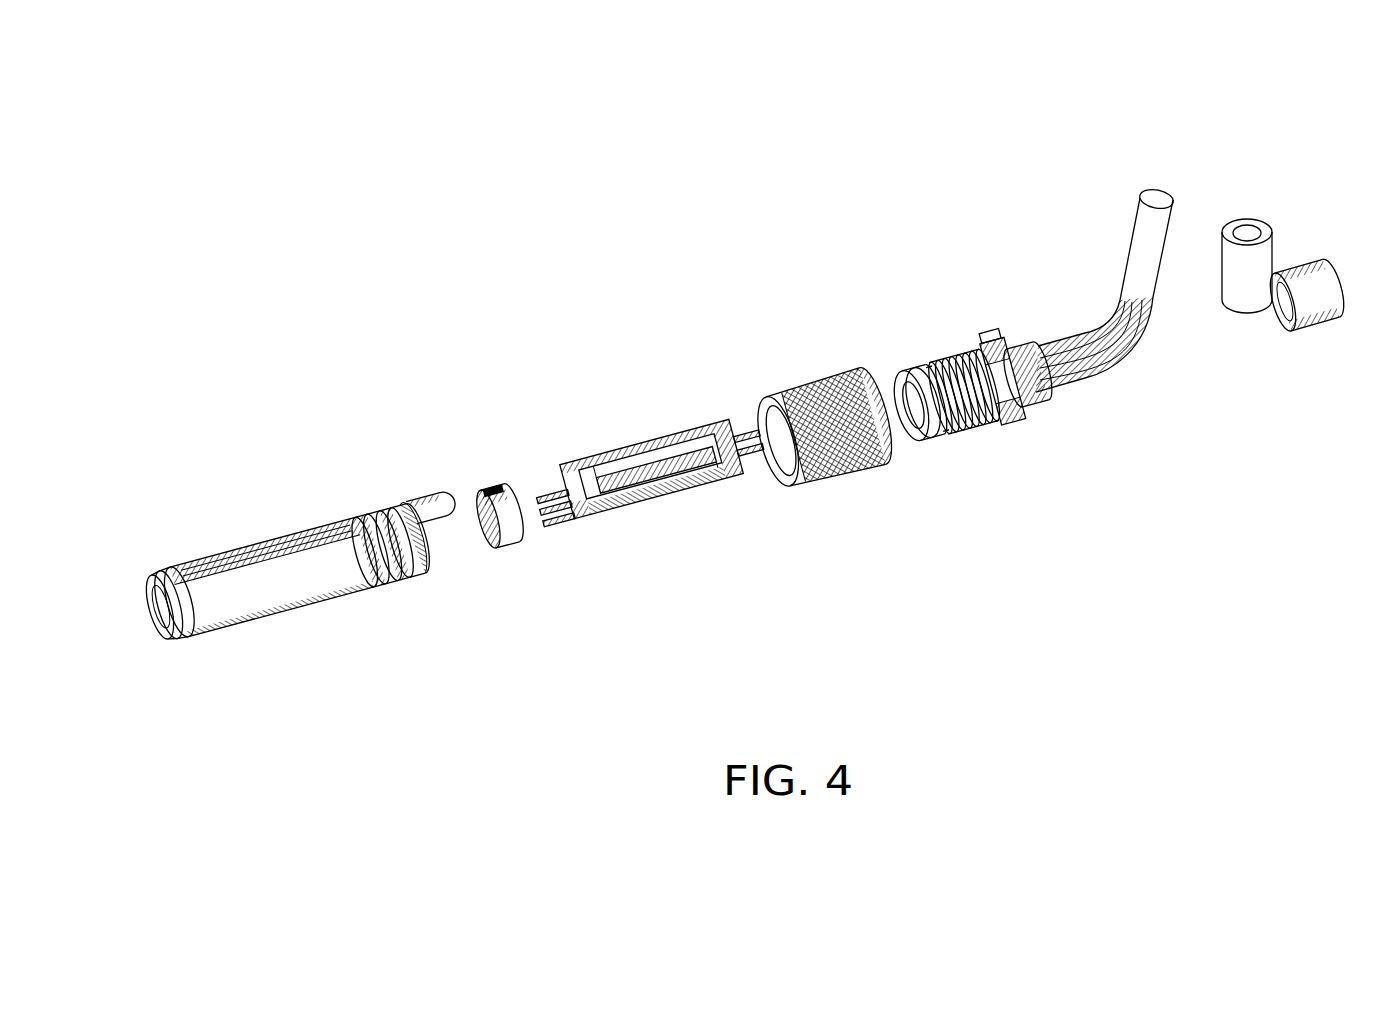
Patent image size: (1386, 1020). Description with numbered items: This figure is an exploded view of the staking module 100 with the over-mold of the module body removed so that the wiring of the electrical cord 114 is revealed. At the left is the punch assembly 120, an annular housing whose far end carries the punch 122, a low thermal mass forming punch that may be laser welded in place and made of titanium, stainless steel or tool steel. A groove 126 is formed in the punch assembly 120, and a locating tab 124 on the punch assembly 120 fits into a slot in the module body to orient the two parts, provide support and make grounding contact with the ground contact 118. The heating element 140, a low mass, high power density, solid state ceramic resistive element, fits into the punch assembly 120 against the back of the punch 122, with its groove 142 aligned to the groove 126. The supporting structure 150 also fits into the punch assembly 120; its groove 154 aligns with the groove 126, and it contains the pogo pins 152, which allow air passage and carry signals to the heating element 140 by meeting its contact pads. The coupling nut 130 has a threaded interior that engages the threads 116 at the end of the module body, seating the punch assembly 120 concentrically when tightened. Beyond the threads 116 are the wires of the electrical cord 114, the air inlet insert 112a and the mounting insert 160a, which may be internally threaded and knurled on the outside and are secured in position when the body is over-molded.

The staking module 100 is at (362, 157).
The electrical cord 114 is at (1152, 193).
The threads 116 is at (981, 409).
The ground contact 118 is at (964, 355).
The coupling nut 130 is at (828, 372).
The supporting structure 150 is at (702, 447).
The groove 154 is at (612, 458).
The pogo pins 152 is at (559, 549).
The groove 142 is at (498, 491).
The heating element 140 is at (510, 543).
The locating tab 124 is at (430, 503).
The groove 126 is at (221, 560).
The punch 122 is at (145, 605).
The punch assembly 120 is at (307, 641).
The air inlet insert 112a is at (1243, 287).
The mounting insert 160a is at (1318, 304).